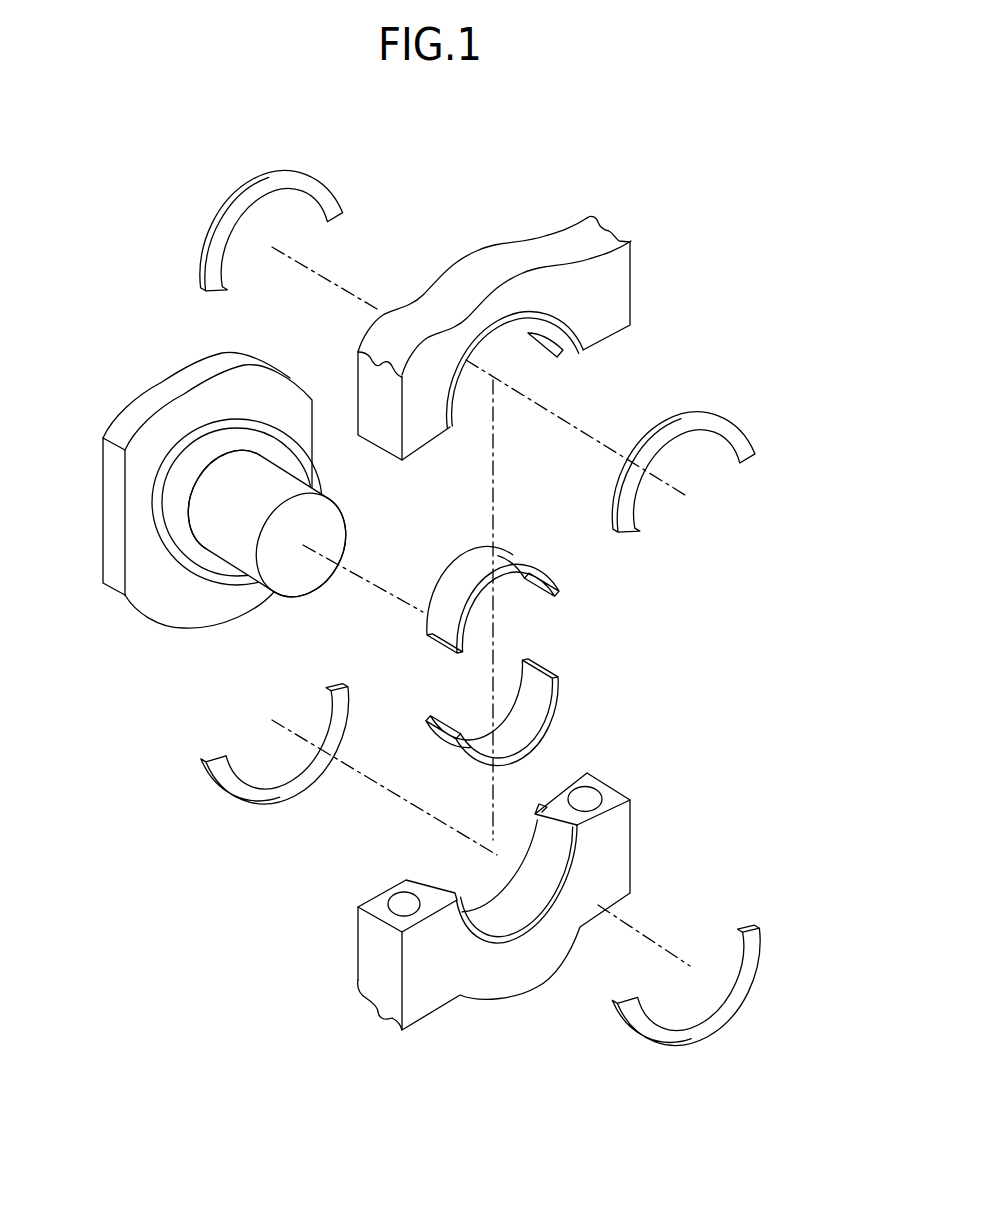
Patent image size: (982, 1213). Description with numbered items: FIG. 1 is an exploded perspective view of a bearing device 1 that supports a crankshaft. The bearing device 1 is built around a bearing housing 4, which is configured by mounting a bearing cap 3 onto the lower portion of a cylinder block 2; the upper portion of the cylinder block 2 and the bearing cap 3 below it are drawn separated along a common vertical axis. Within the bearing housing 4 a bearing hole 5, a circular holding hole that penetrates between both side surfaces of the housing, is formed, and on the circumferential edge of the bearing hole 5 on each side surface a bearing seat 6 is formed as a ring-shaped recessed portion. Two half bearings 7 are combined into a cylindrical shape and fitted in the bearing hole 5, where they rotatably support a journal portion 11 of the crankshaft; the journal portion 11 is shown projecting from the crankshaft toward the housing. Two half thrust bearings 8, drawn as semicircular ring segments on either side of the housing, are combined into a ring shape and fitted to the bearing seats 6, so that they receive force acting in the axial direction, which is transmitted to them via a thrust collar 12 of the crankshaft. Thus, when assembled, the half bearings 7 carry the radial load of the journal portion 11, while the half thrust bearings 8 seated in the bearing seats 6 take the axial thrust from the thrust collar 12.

The bearing device 1 is at (600, 157).
The cylinder block 2 is at (628, 279).
The bearing cap 3 is at (617, 887).
The bearing housing 4 is at (362, 366).
The bearing hole 5 is at (497, 903).
The bearing seat 6 is at (565, 349).
The half bearing 7 is at (470, 559).
The half thrust bearing 8 is at (322, 189).
The journal portion 11 is at (233, 537).
The thrust collar 12 is at (173, 522).